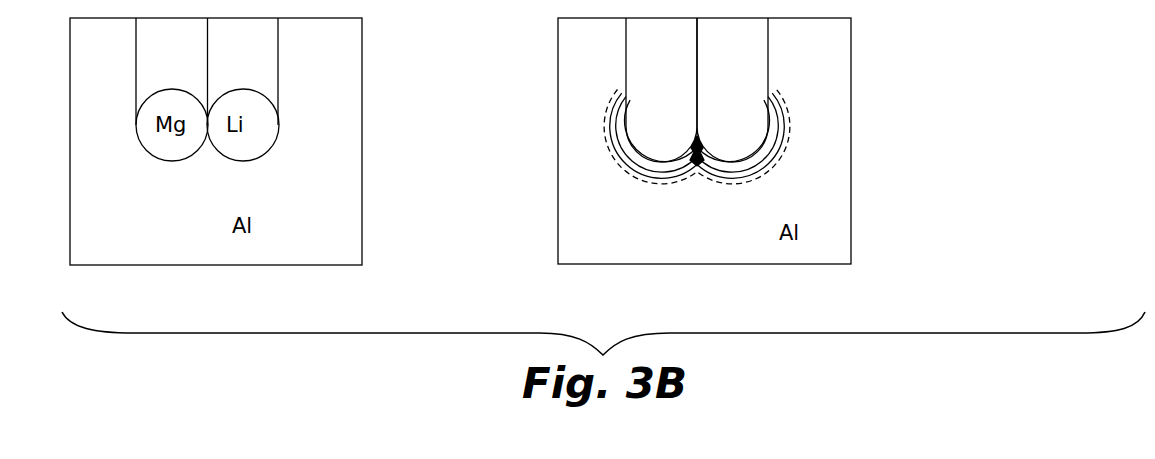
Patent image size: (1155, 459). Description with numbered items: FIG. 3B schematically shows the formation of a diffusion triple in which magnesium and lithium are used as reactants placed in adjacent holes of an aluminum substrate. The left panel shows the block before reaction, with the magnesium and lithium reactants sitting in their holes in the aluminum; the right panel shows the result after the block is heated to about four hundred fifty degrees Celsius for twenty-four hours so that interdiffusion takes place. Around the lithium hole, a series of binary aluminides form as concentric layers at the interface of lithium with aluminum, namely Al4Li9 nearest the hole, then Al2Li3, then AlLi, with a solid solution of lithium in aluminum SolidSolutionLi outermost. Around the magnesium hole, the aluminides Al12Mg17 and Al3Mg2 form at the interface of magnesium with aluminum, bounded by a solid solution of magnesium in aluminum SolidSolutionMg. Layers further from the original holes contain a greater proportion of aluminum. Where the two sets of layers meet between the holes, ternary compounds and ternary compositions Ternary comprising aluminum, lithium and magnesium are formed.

The Al4Li9 aluminide Al4Li9 is at (618, 125).
The Al2Li3 aluminide Al2Li3 is at (617, 142).
The AlLi aluminide AlLi is at (627, 165).
The solid solution of lithium in aluminum SolidSolutionLi is at (655, 187).
The Al12Mg17 aluminide Al12Mg17 is at (772, 128).
The Al3Mg2 aluminide Al3Mg2 is at (773, 152).
The solid solution of magnesium in aluminum SolidSolutionMg is at (758, 172).
The ternary compounds and ternary compositions Ternary is at (698, 163).